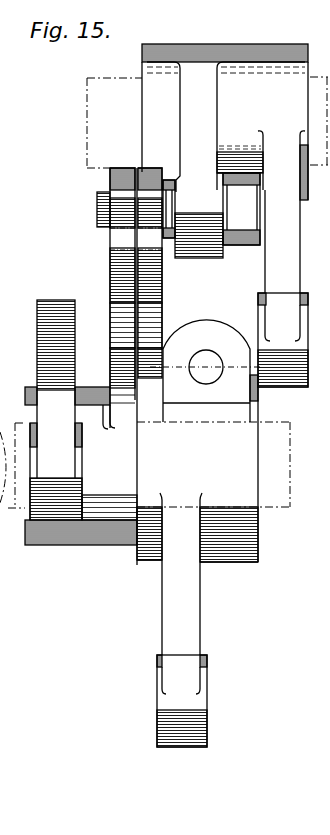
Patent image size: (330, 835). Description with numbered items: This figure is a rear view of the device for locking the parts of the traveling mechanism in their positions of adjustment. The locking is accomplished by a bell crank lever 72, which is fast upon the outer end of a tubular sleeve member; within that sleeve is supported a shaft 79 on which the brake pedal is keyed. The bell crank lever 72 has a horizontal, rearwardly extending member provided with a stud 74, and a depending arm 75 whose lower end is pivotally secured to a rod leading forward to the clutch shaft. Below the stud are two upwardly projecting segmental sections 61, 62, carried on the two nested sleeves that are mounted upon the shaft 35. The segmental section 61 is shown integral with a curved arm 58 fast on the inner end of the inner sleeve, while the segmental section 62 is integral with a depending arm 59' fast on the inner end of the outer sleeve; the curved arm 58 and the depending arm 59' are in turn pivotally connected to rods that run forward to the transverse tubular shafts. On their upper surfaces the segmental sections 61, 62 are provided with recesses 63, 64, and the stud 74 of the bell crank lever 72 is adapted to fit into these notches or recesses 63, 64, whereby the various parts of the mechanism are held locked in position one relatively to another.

The shaft 79 is at (88, 113).
The bell crank lever 72 is at (205, 121).
The segmental section 61 is at (122, 170).
The segmental section 62 is at (151, 170).
The stud 74 is at (97, 206).
The recess 63 is at (121, 218).
The recess 64 is at (164, 240).
The depending arm 75 is at (268, 273).
The curved arm 58 is at (55, 300).
The shaft 35 is at (213, 464).
The depending arm 59' is at (196, 620).